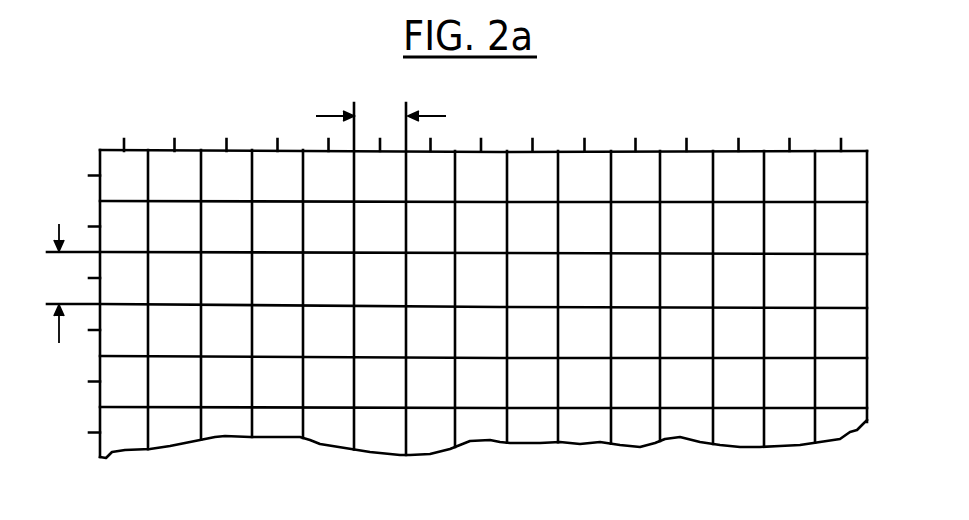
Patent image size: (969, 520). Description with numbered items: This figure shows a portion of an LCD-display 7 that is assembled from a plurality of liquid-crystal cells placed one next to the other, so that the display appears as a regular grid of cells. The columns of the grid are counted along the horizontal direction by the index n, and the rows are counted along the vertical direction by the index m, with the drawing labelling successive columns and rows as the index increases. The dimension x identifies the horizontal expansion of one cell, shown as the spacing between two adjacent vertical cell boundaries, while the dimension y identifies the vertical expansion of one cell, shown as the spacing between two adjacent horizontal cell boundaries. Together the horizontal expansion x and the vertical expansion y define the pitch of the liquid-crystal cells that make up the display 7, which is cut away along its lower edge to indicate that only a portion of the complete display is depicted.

The LCD-display 7 is at (603, 131).
The horizontal expansion x is at (381, 116).
The vertical expansion y is at (57, 283).
The horizontal cell index n is at (471, 114).
The vertical cell index m is at (63, 298).